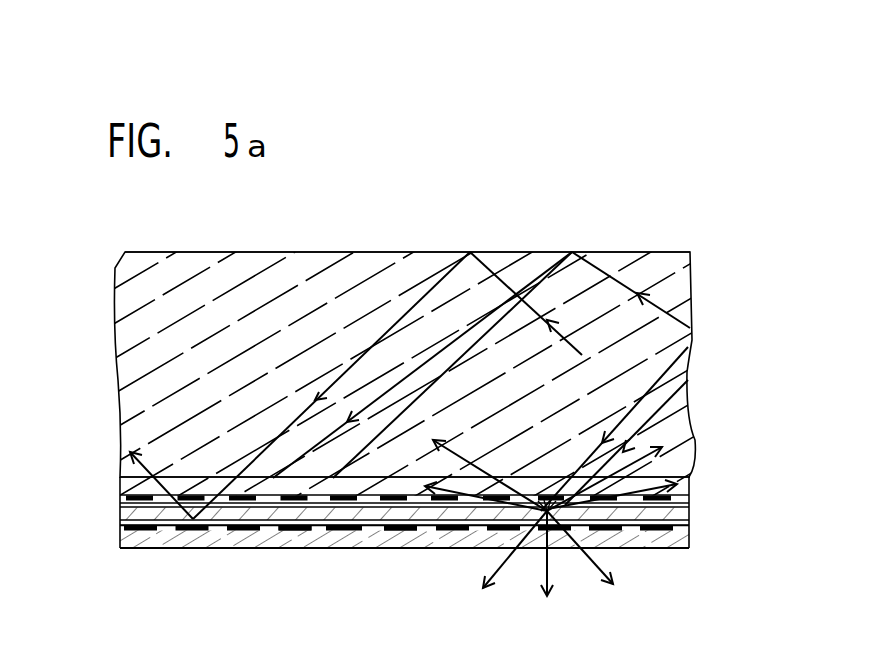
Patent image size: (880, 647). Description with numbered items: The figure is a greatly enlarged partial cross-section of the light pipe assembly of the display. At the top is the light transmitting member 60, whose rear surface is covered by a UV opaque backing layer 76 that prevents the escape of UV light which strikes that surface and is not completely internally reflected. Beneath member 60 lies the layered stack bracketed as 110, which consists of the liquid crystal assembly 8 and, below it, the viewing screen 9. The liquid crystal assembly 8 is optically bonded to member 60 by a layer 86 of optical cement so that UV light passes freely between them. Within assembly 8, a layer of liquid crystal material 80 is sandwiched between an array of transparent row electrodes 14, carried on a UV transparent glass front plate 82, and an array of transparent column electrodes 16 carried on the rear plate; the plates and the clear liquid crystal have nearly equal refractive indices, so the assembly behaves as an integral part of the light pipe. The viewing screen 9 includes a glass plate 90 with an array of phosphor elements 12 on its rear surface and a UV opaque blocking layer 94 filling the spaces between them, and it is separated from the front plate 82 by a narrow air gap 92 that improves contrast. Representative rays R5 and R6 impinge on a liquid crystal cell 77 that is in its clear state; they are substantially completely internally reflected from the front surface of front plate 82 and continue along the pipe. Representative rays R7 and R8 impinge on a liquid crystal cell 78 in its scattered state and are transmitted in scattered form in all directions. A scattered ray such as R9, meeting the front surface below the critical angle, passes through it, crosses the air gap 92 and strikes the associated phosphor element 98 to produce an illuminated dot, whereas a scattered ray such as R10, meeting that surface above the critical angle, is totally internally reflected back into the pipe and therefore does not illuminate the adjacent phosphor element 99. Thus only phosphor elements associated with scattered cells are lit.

The light transmitting member 60 is at (111, 253).
The UV opaque backing layer 76 is at (556, 252).
The representative ray R6 is at (460, 338).
The representative ray R5 is at (359, 364).
The liquid crystal cell 77 is at (273, 478).
The representative ray R7 is at (617, 427).
The representative ray R8 is at (688, 412).
The scattered ray R10 is at (508, 455).
The transparent column electrodes 16 is at (665, 483).
The liquid crystal cell 78 is at (541, 502).
The layered cell structure 110 is at (109, 483).
The liquid crystal assembly 8 is at (119, 483).
The viewing screen 9 is at (119, 528).
The layer of optical cement 86 is at (690, 480).
The layer of liquid crystal material 80 is at (690, 497).
The transparent row electrodes 14 is at (690, 505).
The UV transparent glass front plate 82 is at (690, 515).
The air gap 92 is at (689, 528).
The UV opaque blocking layer 94 is at (397, 543).
The phosphor element 99 is at (448, 526).
The glass plate 90 is at (666, 536).
The scattered ray R9 is at (528, 542).
The phosphor element 98 is at (557, 537).
The phosphor elements 12 is at (647, 550).